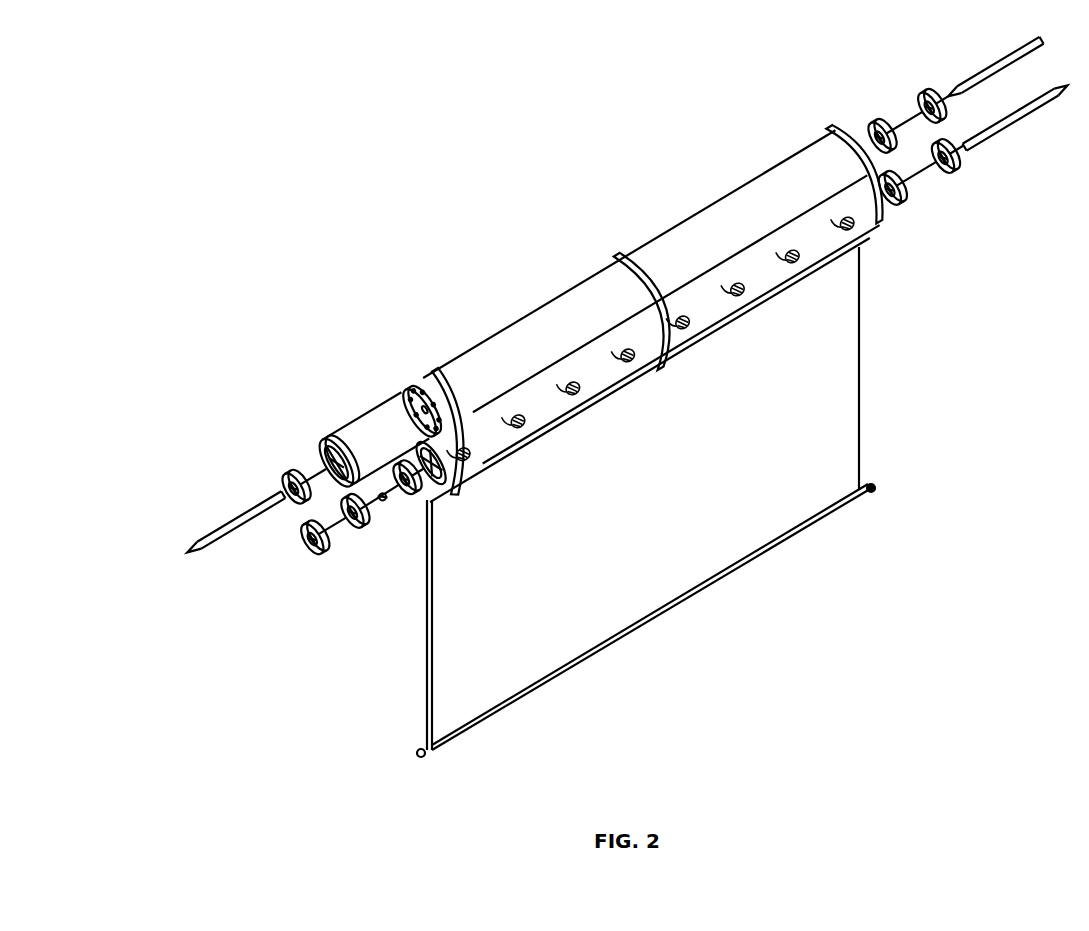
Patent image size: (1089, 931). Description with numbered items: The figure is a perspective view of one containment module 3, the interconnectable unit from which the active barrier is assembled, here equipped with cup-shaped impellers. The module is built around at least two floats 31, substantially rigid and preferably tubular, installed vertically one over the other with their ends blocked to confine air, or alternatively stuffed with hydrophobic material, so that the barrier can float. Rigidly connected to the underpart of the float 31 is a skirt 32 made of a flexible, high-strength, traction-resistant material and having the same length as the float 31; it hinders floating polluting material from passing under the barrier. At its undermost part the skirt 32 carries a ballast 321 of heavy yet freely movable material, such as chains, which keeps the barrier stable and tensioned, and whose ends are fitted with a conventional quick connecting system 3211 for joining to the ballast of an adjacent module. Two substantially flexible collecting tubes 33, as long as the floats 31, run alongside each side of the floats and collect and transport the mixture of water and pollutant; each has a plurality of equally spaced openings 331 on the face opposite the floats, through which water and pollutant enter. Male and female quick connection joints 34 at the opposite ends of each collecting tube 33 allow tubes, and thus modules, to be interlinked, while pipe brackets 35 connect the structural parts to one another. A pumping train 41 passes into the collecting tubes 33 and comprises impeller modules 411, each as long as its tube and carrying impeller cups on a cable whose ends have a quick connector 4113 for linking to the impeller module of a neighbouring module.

The containment module 3 is at (390, 208).
The float 31 is at (636, 280).
The skirt 32 is at (812, 470).
The ballast 321 is at (728, 617).
The quick connecting system 3211 is at (320, 780).
The collecting tube 33 is at (916, 201).
The opening 331 is at (736, 338).
The quick connection joint 34 is at (347, 378).
The pipe bracket 35 is at (605, 240).
The pumping train 41 is at (276, 562).
The impeller module 411 is at (329, 606).
The quick connector 4113 is at (302, 602).